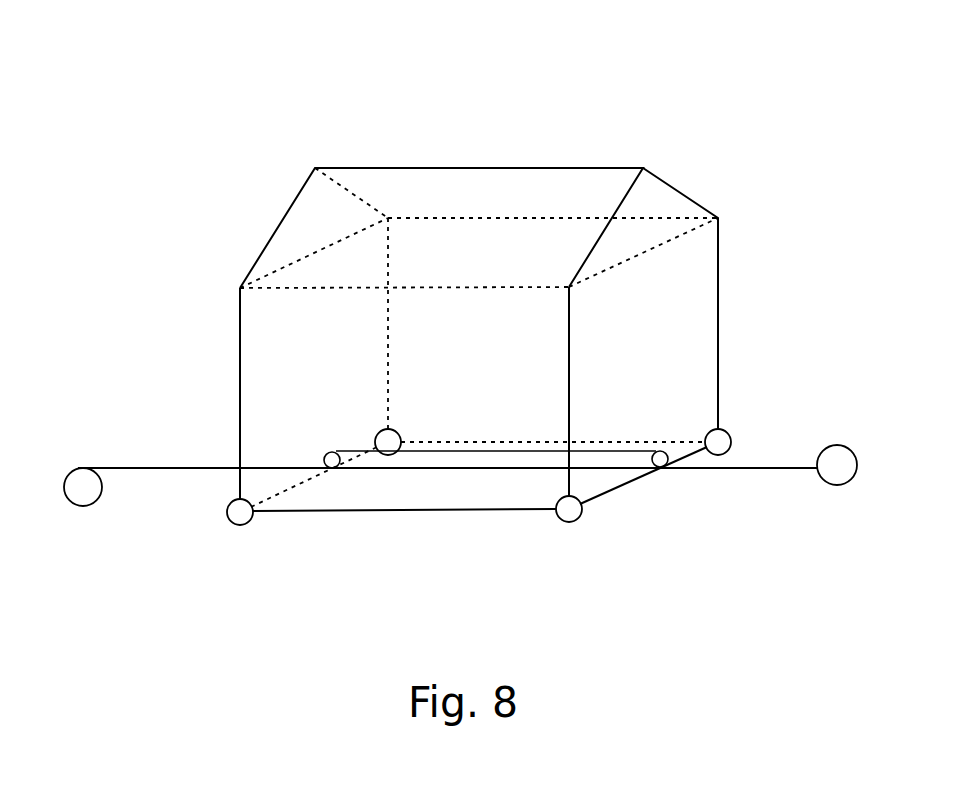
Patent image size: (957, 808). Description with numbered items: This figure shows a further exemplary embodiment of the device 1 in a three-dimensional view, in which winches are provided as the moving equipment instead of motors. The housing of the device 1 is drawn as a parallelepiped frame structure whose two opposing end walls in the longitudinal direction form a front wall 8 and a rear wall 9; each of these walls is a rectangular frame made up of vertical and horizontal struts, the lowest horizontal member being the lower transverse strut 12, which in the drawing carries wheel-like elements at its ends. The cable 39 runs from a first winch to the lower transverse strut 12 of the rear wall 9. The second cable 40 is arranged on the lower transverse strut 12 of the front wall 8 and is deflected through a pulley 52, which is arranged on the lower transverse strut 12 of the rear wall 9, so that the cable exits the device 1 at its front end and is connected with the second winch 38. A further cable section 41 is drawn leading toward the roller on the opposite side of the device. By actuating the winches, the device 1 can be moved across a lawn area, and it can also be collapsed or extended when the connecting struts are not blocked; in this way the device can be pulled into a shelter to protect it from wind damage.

The device 1 is at (707, 92).
The front wall 8 is at (693, 310).
The rear wall 9 is at (257, 353).
The lower transverse strut 12 is at (297, 493).
The second winch 38 is at (83, 487).
The cable 39 is at (833, 472).
The second cable 40 is at (168, 470).
The web section 41 is at (750, 468).
The pulley 52 is at (327, 455).